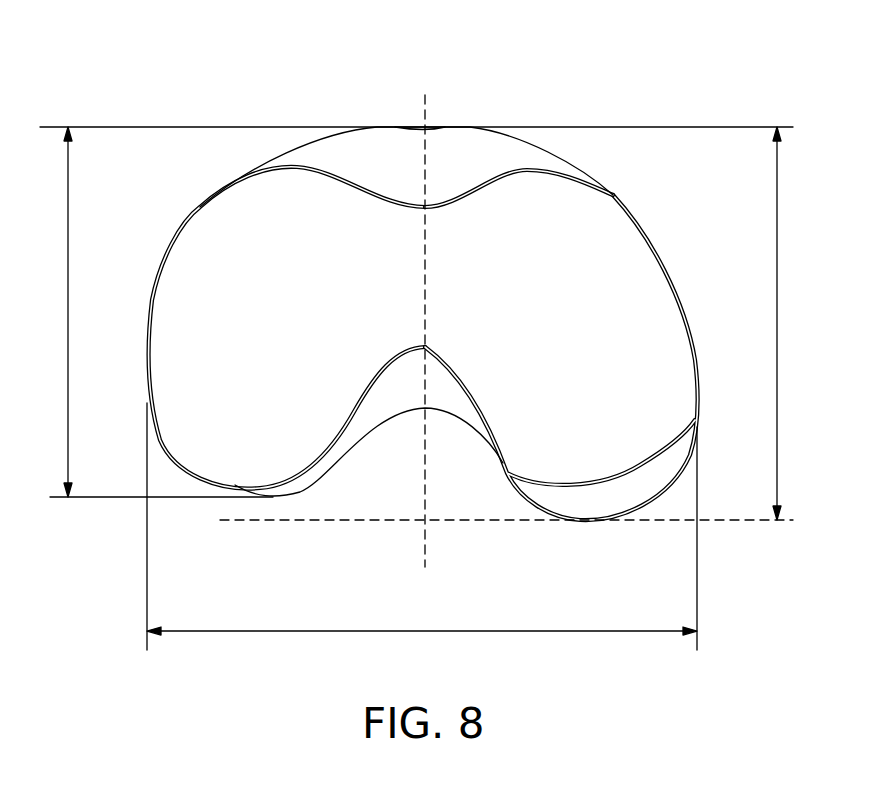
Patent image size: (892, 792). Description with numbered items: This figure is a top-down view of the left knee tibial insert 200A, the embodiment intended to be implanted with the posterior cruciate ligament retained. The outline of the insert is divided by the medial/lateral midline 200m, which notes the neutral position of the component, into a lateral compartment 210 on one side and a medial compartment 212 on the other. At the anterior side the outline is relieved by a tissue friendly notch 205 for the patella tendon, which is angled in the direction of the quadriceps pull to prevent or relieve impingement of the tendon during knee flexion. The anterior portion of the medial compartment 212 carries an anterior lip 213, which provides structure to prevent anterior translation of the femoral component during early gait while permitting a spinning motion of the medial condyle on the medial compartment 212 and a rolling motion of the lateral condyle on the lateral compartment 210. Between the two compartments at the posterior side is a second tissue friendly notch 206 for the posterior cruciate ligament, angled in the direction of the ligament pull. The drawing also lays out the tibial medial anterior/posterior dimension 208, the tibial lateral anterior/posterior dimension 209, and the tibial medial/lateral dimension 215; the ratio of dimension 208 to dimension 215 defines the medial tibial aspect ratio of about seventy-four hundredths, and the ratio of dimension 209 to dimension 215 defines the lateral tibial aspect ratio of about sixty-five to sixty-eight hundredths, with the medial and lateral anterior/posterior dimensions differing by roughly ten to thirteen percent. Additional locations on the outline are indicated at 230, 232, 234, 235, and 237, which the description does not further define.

The tibial insert 200A is at (303, 106).
The patellar groove apex 230 is at (418, 118).
The tissue friendly notch 205 is at (465, 163).
The lateral compartment 210 is at (243, 238).
The anterior lip 213 is at (572, 205).
The medial compartment 212 is at (628, 307).
The tibial medial anterior/posterior dimension 208 is at (777, 280).
The tibial lateral anterior/posterior dimension 209 is at (68, 288).
The lateral-most point 237 is at (138, 380).
The medial-most point 235 is at (710, 411).
The tissue friendly notch 206 is at (460, 390).
The lateral posterior-most point 232 is at (278, 506).
The medial posterior-most point 234 is at (585, 533).
The medial/lateral midline 200m is at (427, 540).
The tibial medial/lateral dimension 215 is at (510, 632).